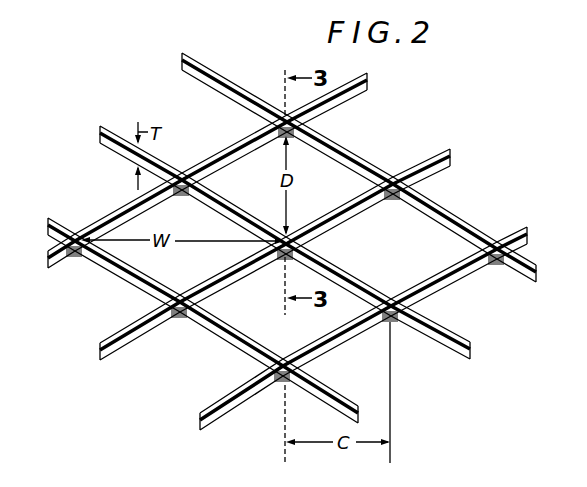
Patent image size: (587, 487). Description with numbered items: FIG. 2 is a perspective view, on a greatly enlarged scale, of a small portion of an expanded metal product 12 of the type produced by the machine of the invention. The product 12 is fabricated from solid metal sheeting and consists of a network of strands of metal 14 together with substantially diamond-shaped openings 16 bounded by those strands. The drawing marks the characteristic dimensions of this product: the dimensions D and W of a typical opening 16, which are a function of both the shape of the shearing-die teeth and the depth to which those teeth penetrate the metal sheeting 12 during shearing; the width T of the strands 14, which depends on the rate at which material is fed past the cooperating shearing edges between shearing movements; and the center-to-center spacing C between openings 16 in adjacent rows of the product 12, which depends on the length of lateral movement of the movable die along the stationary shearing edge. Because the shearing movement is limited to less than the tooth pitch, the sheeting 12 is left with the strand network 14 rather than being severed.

The expanded metal product 12 is at (484, 140).
The strands of metal 14 is at (373, 82).
The diamond-shaped openings 16 is at (364, 186).